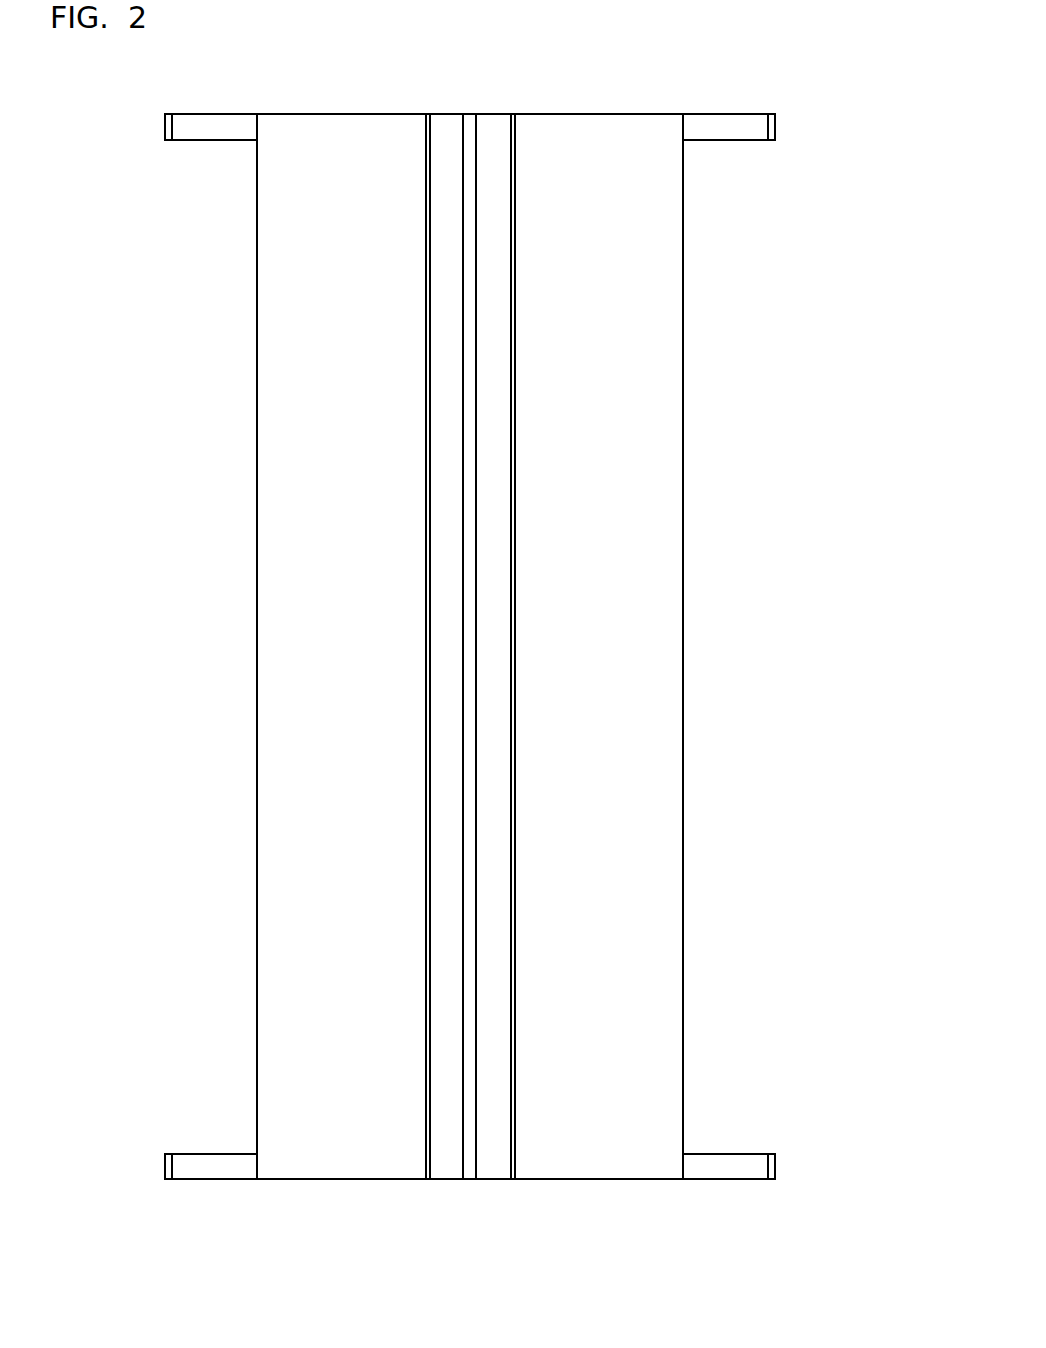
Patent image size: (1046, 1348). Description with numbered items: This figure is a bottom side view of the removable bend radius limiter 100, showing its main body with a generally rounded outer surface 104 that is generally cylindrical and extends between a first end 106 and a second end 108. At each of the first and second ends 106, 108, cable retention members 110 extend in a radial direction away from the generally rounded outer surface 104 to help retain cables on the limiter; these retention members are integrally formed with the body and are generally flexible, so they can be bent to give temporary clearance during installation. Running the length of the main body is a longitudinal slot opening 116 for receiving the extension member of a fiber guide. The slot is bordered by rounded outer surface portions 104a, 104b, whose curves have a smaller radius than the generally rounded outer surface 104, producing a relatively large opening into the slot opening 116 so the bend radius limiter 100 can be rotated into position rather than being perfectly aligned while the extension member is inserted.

The removable bend radius limiter 100 is at (328, 115).
The generally rounded outer surface 104 is at (665, 917).
The rounded outer surface portion 104a is at (492, 633).
The rounded outer surface portion 104b is at (448, 633).
The first end 106 is at (590, 1180).
The second end 108 is at (605, 115).
The cable retention member 110 is at (208, 128).
The longitudinal slot opening 116 is at (470, 1170).